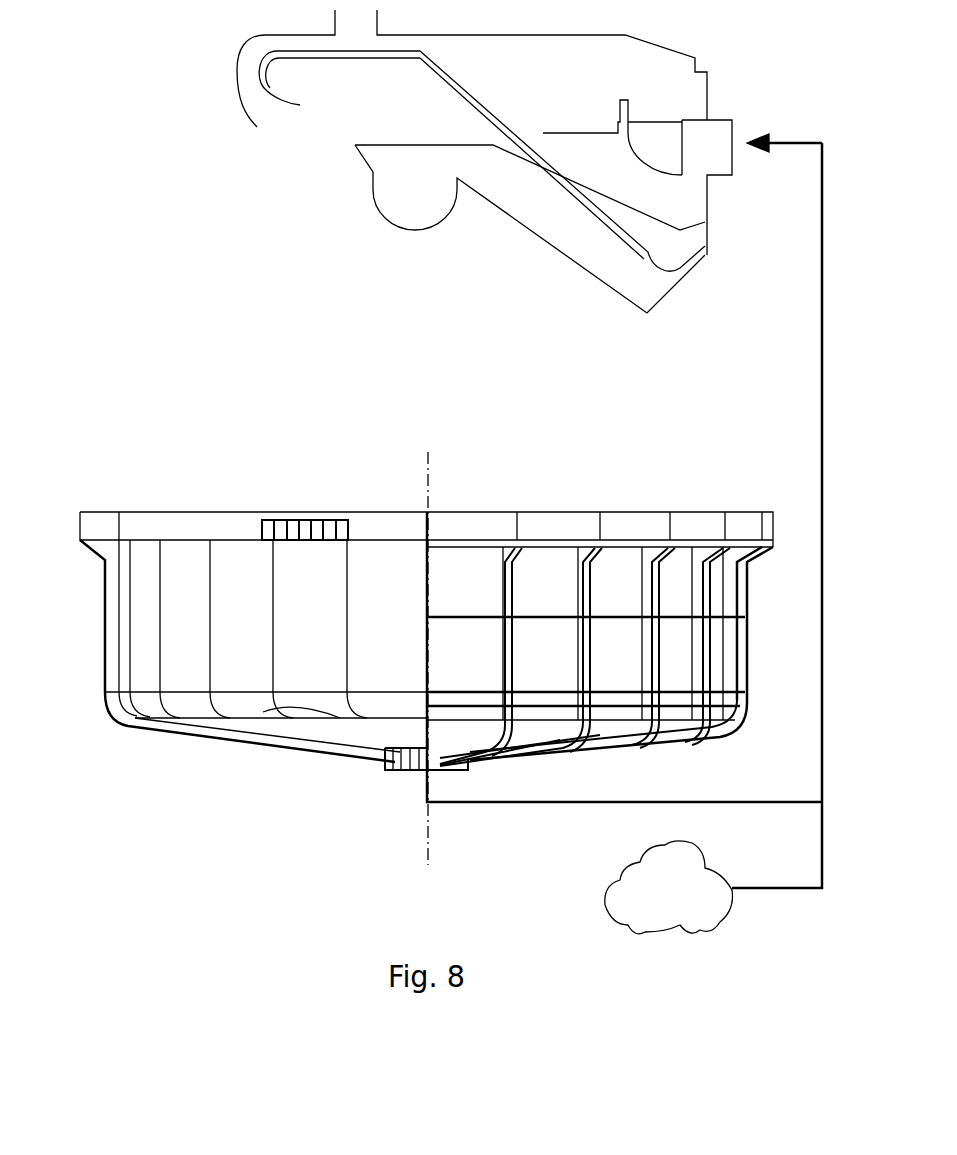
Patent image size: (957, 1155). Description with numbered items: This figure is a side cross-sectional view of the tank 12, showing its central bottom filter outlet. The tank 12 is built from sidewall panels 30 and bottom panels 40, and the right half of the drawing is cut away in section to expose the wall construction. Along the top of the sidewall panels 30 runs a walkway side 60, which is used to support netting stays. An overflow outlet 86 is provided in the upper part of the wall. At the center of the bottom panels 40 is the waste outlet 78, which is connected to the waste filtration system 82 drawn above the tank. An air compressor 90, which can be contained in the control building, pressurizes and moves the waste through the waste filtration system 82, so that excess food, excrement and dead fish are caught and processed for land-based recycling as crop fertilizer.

The tank 12 is at (451, 644).
The sidewall panels 30 is at (240, 578).
The bottom panels 40 is at (262, 712).
The walkway side 60 is at (555, 528).
The waste outlet 78 is at (392, 776).
The waste filtration system 82 is at (532, 253).
The overflow outlet 86 is at (308, 527).
The air compressor 90 is at (606, 912).